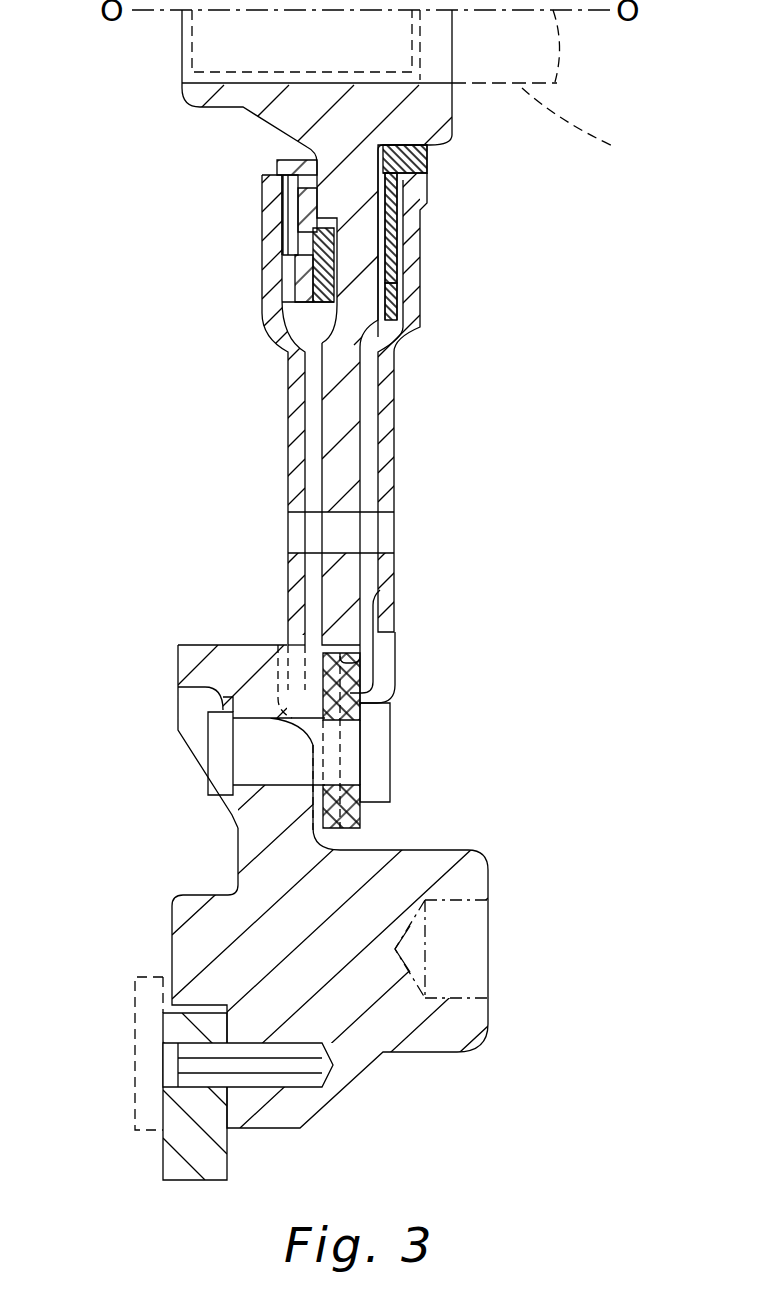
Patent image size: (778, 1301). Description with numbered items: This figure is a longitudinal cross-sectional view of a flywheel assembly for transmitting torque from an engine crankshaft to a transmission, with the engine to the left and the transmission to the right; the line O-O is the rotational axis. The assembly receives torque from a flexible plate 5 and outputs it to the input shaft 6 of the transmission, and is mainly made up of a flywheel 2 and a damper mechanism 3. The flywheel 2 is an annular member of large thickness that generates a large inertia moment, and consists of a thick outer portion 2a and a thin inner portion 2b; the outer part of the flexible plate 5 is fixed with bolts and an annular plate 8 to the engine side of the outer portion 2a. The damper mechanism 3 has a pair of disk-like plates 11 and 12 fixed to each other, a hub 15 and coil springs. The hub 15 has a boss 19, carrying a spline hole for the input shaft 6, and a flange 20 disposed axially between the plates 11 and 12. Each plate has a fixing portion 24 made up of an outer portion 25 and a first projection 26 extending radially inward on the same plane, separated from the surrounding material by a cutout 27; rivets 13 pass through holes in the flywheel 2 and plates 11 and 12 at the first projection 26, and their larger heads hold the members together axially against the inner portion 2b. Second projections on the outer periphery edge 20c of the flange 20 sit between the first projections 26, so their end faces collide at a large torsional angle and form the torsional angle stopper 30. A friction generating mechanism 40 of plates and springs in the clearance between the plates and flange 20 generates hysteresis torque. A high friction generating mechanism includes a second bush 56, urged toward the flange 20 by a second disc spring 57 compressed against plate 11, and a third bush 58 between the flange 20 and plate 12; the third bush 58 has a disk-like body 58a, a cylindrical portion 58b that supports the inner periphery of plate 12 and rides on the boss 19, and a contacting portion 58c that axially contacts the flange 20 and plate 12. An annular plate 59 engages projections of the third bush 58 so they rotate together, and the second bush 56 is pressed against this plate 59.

The flywheel 2 is at (327, 956).
The outer portion 2a is at (195, 937).
The inner portion 2b is at (263, 708).
The damper mechanism 3 is at (480, 402).
The flexible plate 5 is at (135, 1040).
The input shaft 6 is at (580, 93).
The annular plate 8 is at (202, 1150).
The disk-like plate 11 is at (270, 420).
The disk-like plate 12 is at (417, 364).
The rivet 13 is at (262, 767).
The hub 15 is at (458, 150).
The boss 19 is at (297, 108).
The flange 20 is at (337, 413).
The outer periphery edge 20c is at (380, 590).
The fixing portion 24 is at (452, 740).
The outer portion 25 is at (345, 788).
The first projection 26 is at (340, 724).
The cutout 27 is at (297, 637).
The torsional angle stopper 30 is at (388, 622).
The friction generating mechanism 40 is at (305, 277).
The second bush 56 is at (290, 265).
The second disc spring 57 is at (280, 247).
The third bush 58 is at (461, 241).
The body 58a is at (405, 222).
The cylindrical portion 58b is at (430, 163).
The contacting portion 58c is at (400, 300).
The plate 59 is at (297, 300).